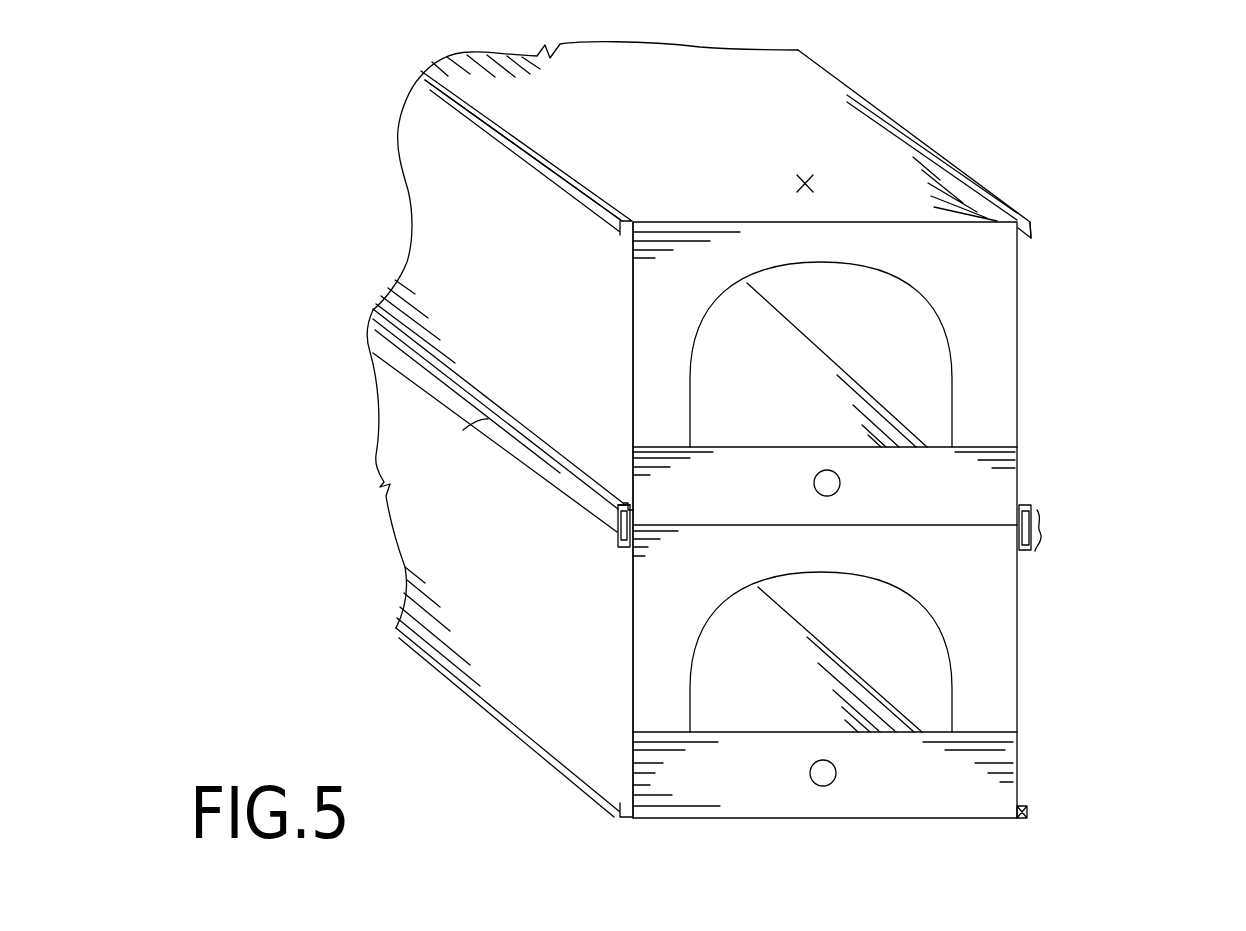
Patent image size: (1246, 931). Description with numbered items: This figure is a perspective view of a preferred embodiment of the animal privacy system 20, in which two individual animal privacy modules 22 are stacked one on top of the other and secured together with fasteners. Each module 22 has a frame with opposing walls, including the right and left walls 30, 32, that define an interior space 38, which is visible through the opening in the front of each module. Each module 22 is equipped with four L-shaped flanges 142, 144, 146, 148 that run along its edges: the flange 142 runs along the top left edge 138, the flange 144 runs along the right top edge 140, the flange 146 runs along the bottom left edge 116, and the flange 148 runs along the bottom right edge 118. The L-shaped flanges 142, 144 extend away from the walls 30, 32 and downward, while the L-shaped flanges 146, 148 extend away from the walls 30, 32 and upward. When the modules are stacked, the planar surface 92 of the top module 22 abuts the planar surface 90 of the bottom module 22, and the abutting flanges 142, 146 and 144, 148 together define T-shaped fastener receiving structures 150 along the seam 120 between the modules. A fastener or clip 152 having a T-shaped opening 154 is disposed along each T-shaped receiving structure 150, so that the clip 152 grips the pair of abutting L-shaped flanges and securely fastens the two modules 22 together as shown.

The animal privacy system 20 is at (1078, 227).
The animal privacy module 22 is at (813, 127).
The right wall 30 is at (931, 342).
The left wall 32 is at (565, 285).
The interior space 38 is at (750, 372).
The planar surface of the bottom module 90 is at (795, 178).
The planar surface of the top module 92 is at (755, 790).
The bottom left edge 116 is at (1003, 500).
The bottom right edge 118 is at (664, 540).
The seam between modules 120 is at (1017, 514).
The top left edge 138 is at (918, 134).
The right top edge 140 is at (604, 172).
The L-shaped flange 142 is at (973, 178).
The L-shaped flange 144 is at (547, 155).
The L-shaped flange 146 is at (1028, 516).
The L-shaped flange 148 is at (613, 518).
The T-shaped fastener receiving structure 150 is at (608, 526).
The fastener or clip 152 is at (463, 430).
The T-shaped opening 154 is at (624, 510).